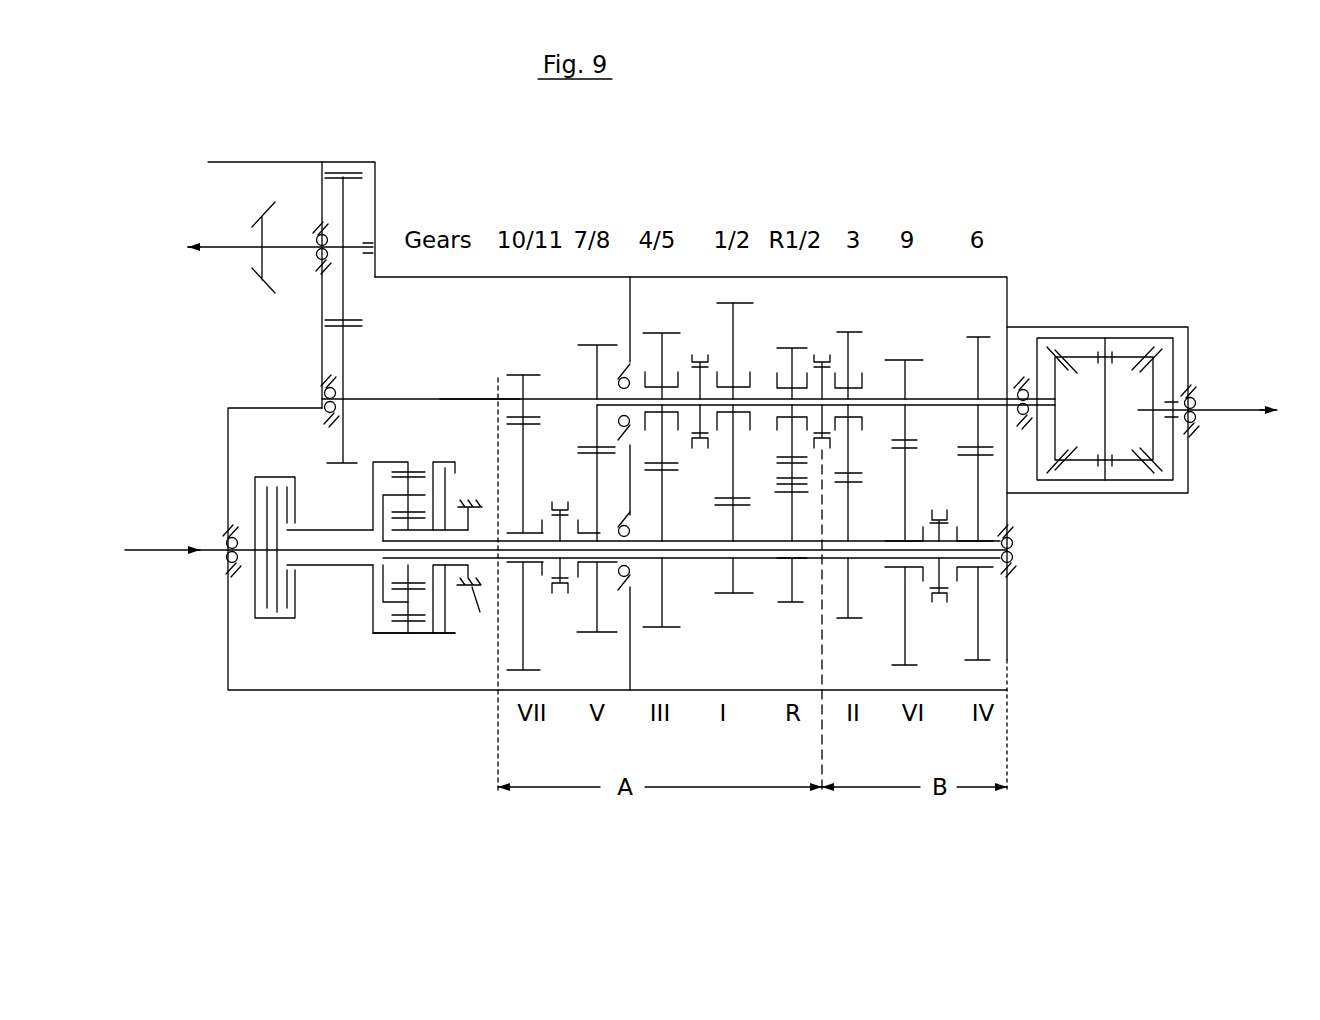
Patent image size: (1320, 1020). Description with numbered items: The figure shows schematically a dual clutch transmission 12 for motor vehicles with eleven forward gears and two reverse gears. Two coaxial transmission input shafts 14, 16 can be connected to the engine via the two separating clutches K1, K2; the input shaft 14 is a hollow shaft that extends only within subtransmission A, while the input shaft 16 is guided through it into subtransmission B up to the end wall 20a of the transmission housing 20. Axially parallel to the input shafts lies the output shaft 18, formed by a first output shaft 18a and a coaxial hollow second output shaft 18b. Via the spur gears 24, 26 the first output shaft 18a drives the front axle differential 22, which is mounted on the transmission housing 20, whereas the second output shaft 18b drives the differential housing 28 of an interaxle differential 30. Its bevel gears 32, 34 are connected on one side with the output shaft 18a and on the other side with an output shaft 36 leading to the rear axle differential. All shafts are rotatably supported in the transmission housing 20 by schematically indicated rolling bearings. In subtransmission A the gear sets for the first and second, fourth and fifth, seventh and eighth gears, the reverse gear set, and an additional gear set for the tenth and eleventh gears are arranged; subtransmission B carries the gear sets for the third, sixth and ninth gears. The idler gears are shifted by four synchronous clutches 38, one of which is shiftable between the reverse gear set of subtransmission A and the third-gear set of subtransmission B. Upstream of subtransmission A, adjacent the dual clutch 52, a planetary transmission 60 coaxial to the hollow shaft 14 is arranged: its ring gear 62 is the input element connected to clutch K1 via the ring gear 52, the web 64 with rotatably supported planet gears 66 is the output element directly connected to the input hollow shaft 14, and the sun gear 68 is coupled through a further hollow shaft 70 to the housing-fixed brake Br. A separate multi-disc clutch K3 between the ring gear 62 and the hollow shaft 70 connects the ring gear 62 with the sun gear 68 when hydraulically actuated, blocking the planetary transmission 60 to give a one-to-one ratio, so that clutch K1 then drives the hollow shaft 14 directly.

The dual clutch transmission 12 is at (1012, 202).
The transmission input shaft 14 is at (696, 545).
The transmission input shaft 16 is at (948, 548).
The output shaft 18 is at (452, 395).
The first output shaft 18a is at (478, 398).
The second output shaft 18b is at (935, 405).
The transmission housing 20 is at (1000, 275).
The end wall 20a is at (1010, 604).
The front axle differential 22 is at (253, 202).
The spur gear 24 is at (328, 355).
The spur gear 26 is at (350, 212).
The differential housing 28 is at (1025, 356).
The interaxle differential 30 is at (1157, 322).
The bevel gear 32 is at (1057, 430).
The bevel gear 34 is at (1155, 385).
The output shaft 36 is at (1227, 413).
The synchronous clutch 38 is at (700, 350).
The ring gear 52 is at (313, 567).
The planetary transmission 60 is at (376, 657).
The ring gear 62 is at (373, 634).
The web 64 is at (373, 594).
The planet gears 66 is at (405, 612).
The sun gear 68 is at (447, 636).
The hollow shaft 70 is at (446, 530).
The separating clutch K1 is at (283, 620).
The separating clutch K2 is at (262, 620).
The multi-disc clutch K3 is at (447, 642).
The brake Br is at (473, 613).